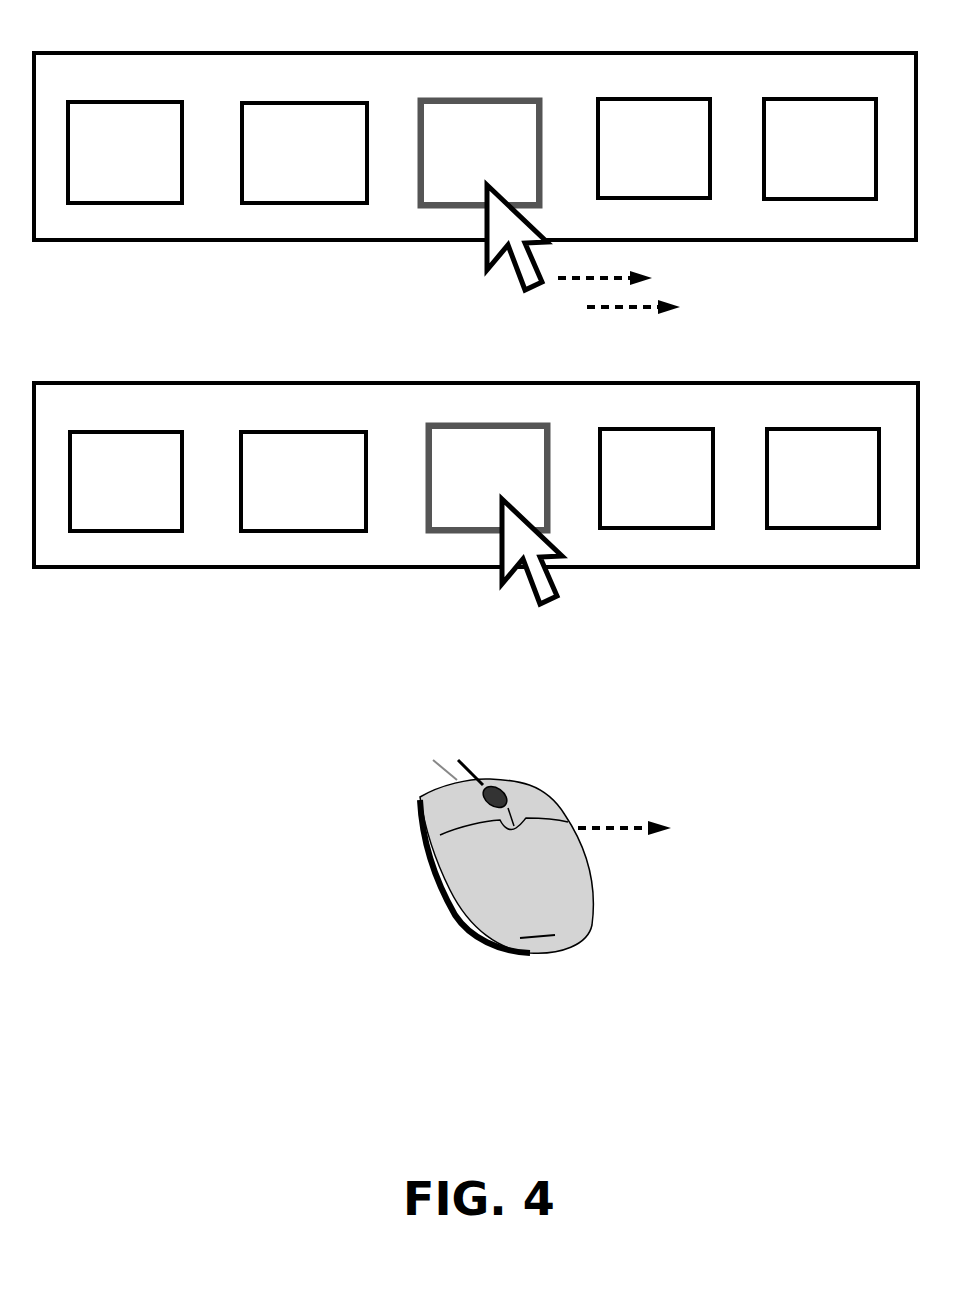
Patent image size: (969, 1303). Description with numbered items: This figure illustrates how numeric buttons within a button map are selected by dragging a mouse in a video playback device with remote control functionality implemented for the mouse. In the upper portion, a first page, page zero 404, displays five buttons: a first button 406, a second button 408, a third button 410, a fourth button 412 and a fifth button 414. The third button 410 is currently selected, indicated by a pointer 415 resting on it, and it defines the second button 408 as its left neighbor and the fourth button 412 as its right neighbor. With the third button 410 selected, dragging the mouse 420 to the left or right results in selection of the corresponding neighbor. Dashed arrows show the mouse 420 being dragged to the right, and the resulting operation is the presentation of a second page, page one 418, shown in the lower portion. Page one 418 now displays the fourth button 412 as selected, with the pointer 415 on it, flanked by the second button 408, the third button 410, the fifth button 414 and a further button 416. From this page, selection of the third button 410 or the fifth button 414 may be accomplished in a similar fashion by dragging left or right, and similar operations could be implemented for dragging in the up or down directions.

The Page 0 404 is at (613, 52).
The first button 406 is at (140, 105).
The second button 408 is at (310, 103).
The third button 410 is at (483, 98).
The fourth button 412 is at (653, 103).
The fifth button 414 is at (820, 103).
The cursor 415 is at (502, 266).
The sixth item thumbnail 416 is at (825, 432).
The Page 1 418 is at (673, 382).
The mouse 420 is at (418, 800).